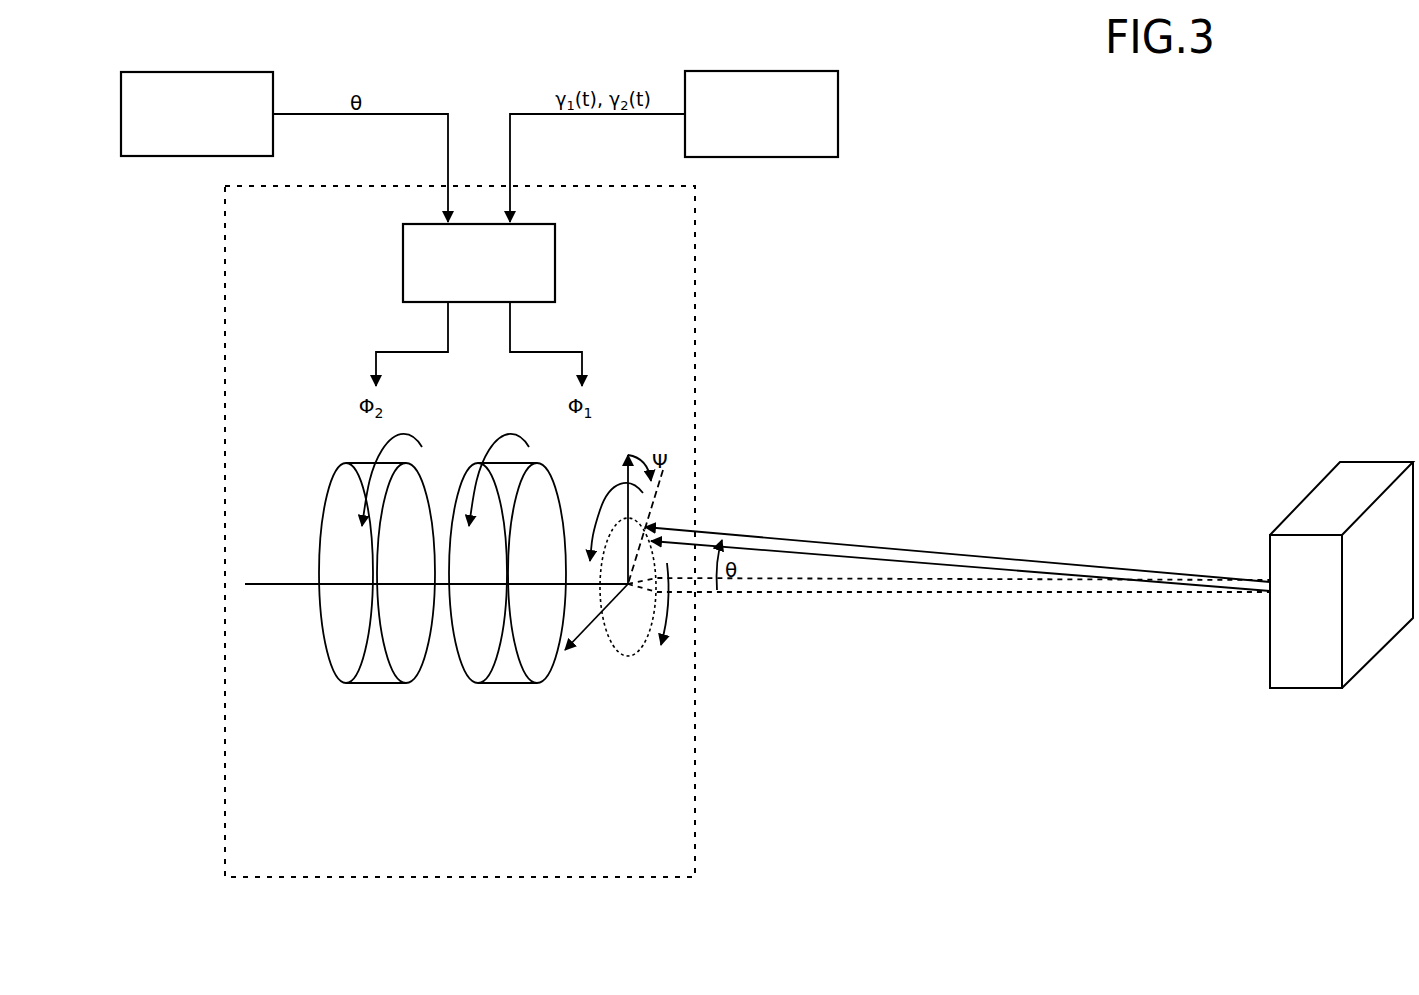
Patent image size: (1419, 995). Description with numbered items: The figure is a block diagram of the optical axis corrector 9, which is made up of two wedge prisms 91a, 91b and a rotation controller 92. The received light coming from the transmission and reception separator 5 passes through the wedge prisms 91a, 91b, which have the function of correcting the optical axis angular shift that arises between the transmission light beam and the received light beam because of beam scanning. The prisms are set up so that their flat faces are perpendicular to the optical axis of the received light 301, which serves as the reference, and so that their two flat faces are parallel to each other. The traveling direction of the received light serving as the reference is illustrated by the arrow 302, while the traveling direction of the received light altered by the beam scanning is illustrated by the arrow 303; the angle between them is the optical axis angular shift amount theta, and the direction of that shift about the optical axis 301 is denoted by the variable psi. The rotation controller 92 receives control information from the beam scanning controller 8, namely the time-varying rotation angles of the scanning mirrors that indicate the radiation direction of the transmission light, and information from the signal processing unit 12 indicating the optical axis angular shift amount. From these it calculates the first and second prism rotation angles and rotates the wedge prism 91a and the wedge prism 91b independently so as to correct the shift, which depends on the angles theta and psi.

The signal processing unit 12 is at (226, 72).
The beam scanning controller 8 is at (786, 71).
The rotation controller 92 is at (556, 250).
The optical axis corrector 9 is at (697, 850).
The wedge prism 91a is at (507, 674).
The wedge prism 91b is at (362, 674).
The optical axis of the received light 301 is at (278, 587).
The arrow 302 is at (1088, 596).
The arrow 303 is at (954, 548).
The transmission and reception separator 5 is at (1363, 462).